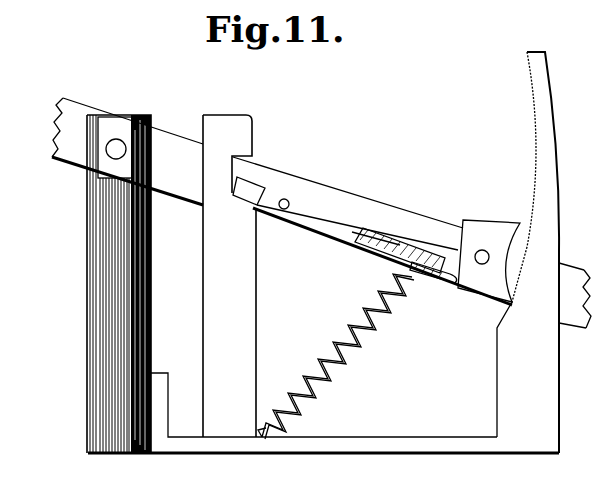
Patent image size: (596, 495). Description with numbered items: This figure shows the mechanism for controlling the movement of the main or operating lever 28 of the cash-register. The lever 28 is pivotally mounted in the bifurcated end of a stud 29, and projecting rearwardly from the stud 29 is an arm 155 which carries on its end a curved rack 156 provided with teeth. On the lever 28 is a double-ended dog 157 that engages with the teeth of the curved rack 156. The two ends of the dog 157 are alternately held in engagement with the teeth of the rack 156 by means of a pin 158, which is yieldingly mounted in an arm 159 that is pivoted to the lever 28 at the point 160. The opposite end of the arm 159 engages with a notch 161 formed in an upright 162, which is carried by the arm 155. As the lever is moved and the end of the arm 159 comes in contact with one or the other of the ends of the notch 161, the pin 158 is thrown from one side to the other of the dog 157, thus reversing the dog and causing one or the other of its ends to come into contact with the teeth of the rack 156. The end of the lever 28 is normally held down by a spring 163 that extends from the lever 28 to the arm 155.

The main or operating lever 28 is at (321, 213).
The stud 29 is at (151, 292).
The arm 155 is at (358, 443).
The curved rack 156 is at (528, 252).
The double-ended dog 157 is at (485, 223).
The pin 158 is at (440, 282).
The arm 159 is at (398, 241).
The point 160 is at (288, 200).
The notch 161 is at (241, 168).
The upright 162 is at (229, 276).
The spring 163 is at (347, 355).